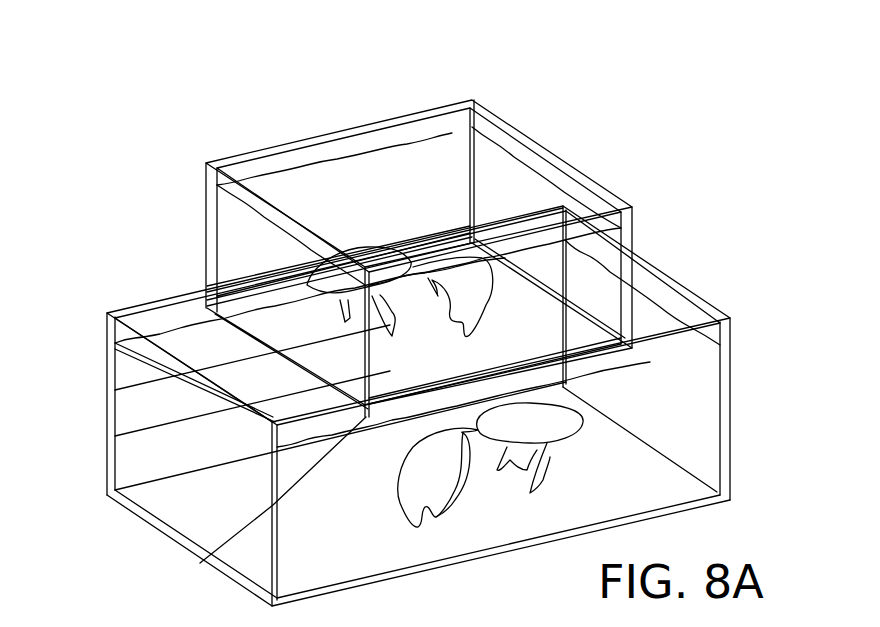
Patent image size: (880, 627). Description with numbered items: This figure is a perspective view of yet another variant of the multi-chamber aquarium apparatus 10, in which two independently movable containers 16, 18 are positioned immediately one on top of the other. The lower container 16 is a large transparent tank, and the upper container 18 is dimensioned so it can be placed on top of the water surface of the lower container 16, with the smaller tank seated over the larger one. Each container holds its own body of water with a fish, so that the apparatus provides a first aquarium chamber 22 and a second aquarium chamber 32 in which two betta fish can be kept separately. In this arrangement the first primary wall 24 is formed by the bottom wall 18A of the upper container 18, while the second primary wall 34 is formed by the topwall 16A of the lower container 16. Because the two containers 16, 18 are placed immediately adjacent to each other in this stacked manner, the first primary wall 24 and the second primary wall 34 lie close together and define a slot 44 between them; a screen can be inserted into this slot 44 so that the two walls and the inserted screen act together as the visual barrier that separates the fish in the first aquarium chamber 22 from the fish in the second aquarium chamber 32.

The multi-chamber aquarium apparatus 10 is at (282, 72).
The container 16 is at (733, 398).
The topwall of container 16 16A is at (115, 391).
The container 18 is at (523, 128).
The bottom wall of container 18 18A is at (212, 287).
The first aquarium chamber 22 is at (653, 313).
The first transparent primary wall 24 is at (115, 437).
The second aquarium chamber 32 is at (297, 181).
The second transparent primary wall 34 is at (212, 300).
The slot 44 is at (205, 561).